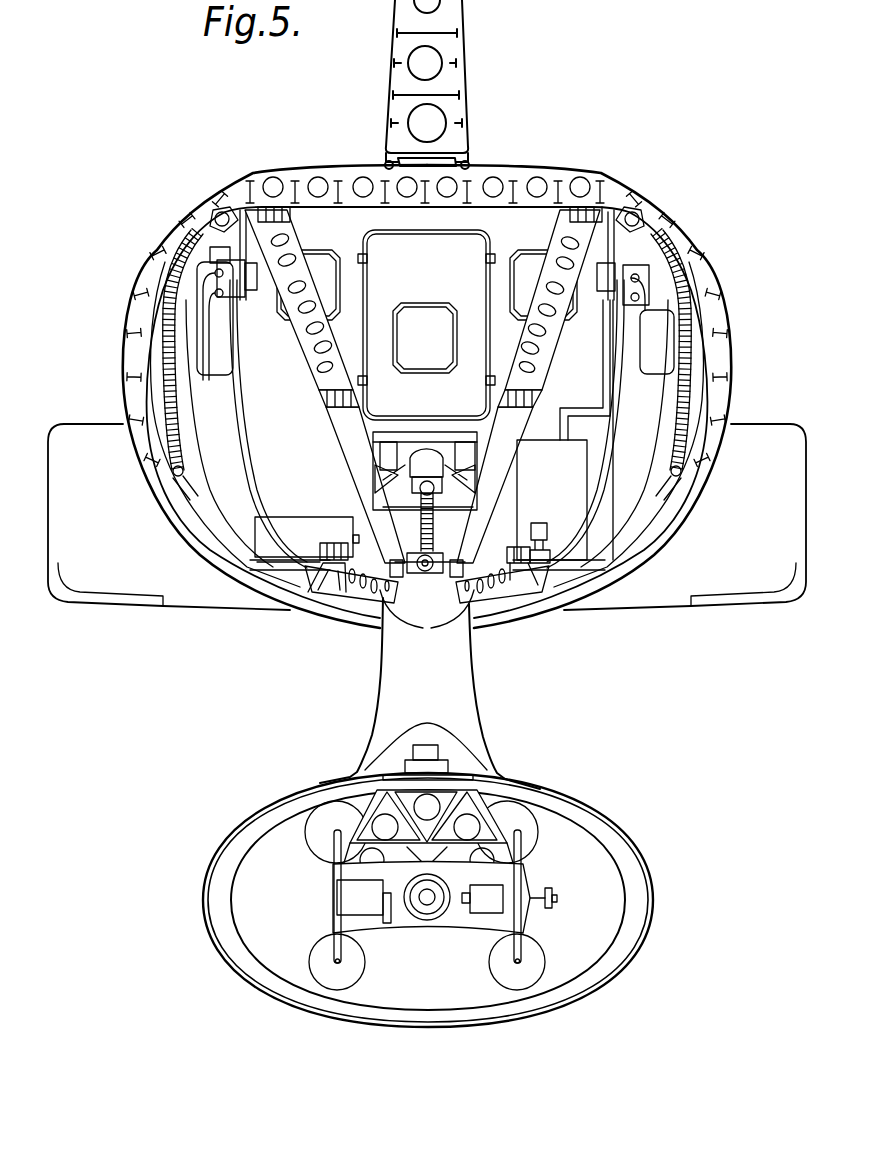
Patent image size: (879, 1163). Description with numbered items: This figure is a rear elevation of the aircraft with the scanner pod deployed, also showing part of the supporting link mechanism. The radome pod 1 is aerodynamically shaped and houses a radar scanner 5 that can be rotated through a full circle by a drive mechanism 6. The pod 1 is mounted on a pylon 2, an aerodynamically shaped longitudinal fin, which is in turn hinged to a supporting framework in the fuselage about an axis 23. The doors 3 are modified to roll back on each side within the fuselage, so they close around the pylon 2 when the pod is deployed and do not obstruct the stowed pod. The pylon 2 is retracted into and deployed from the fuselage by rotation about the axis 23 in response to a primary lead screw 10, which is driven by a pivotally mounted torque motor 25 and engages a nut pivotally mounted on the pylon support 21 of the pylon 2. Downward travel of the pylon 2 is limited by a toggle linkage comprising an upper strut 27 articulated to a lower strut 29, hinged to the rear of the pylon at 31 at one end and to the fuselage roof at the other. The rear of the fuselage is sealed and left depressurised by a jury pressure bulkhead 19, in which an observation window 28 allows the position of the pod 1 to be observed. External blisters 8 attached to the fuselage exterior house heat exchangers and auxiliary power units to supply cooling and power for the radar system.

The radome pod 1 is at (641, 833).
The pylon 2 is at (474, 707).
The doors 3 is at (165, 252).
The radar scanner 5 is at (628, 912).
The drive mechanism 6 is at (455, 769).
The external blisters 8 is at (68, 446).
The primary lead screw 10 is at (420, 525).
The jury pressure bulkhead 19 is at (258, 413).
The pylon support 21 is at (358, 583).
The axis 23 is at (305, 575).
The torque motor 25 is at (425, 460).
The upper strut 27 is at (296, 270).
The observation window 28 is at (440, 306).
The lower strut 29 is at (353, 455).
The hinge 31 is at (378, 608).